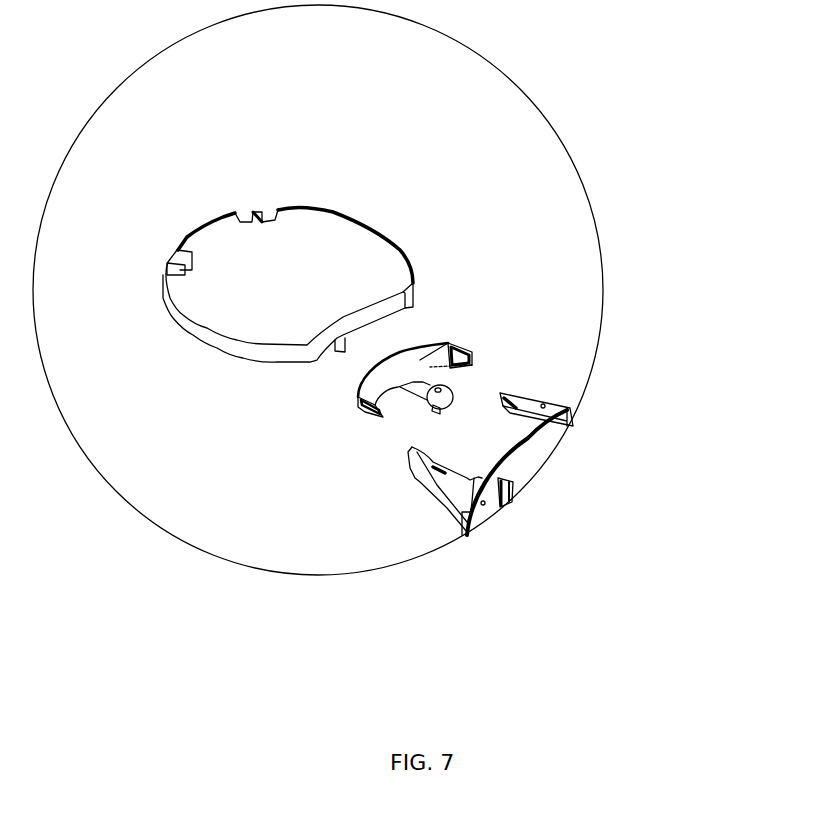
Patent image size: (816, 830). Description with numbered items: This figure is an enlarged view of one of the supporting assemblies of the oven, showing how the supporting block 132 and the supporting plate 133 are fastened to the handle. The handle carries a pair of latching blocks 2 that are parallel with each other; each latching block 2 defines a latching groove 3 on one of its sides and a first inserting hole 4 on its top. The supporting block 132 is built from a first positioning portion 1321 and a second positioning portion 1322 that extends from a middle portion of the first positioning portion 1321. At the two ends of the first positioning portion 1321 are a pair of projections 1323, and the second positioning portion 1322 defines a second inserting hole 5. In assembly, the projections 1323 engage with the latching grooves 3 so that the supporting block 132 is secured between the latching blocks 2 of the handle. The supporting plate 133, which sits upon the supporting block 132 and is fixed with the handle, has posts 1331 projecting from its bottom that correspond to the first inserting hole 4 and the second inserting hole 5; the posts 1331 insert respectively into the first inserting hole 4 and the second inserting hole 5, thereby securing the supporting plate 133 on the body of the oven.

The supporting plate 133 is at (333, 267).
The posts 1331 is at (395, 337).
The supporting block 132 is at (562, 352).
The first positioning portion 1321 is at (472, 352).
The projections 1323 is at (472, 355).
The second positioning portion 1322 is at (445, 383).
The latching blocks 2 is at (527, 420).
The latching groove 3 is at (512, 415).
The first inserting hole 4 is at (560, 408).
The second inserting hole 5 is at (437, 402).